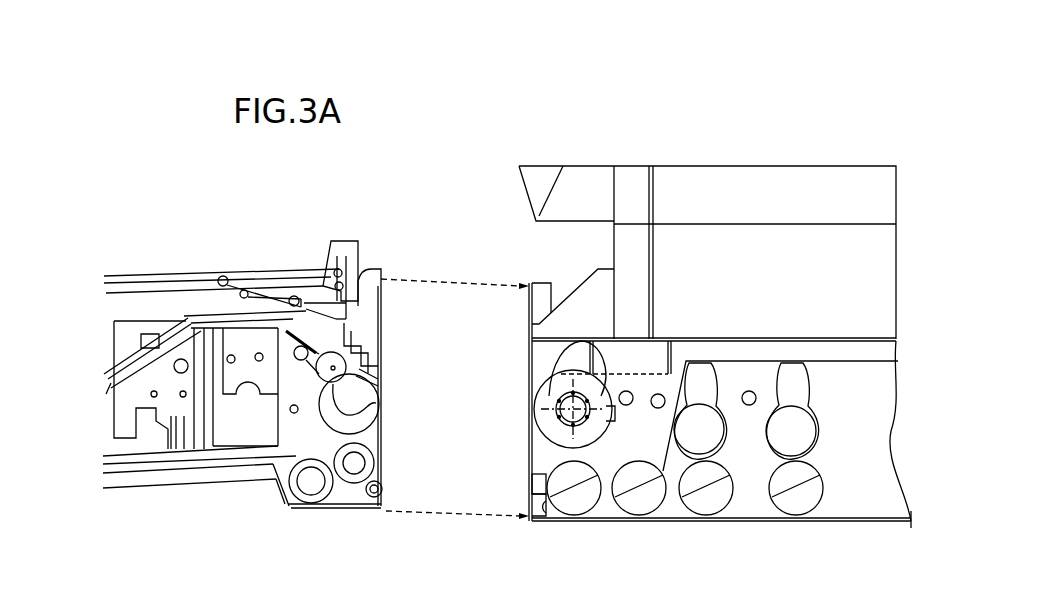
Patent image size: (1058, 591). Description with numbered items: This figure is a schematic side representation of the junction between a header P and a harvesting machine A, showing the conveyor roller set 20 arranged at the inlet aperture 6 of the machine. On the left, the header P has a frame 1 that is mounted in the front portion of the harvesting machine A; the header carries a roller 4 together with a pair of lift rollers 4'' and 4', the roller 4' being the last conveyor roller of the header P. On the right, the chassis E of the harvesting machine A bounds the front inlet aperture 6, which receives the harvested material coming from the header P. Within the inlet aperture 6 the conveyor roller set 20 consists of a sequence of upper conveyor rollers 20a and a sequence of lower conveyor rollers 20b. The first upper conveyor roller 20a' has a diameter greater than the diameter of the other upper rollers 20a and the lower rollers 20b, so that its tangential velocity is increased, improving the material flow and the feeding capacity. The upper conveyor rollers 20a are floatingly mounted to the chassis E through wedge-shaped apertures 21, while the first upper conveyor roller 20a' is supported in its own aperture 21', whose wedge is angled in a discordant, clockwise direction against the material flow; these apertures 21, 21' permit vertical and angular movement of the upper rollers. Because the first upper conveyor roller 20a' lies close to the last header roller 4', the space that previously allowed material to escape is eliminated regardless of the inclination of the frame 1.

The header P is at (100, 165).
The frame 1 is at (250, 340).
The roller 4 is at (311, 521).
The lift roller 4'' is at (354, 513).
The last conveyor roller 4' is at (371, 478).
The inlet aperture 6 is at (528, 405).
The harvesting machine A is at (856, 128).
The chassis E is at (742, 200).
The set of conveyor rollers 20 is at (808, 532).
The upper conveyor rollers 20a is at (811, 396).
The first upper conveyor roller 20a' is at (534, 417).
The lower conveyor rollers 20b is at (640, 507).
The apertures 21 is at (809, 364).
The aperture 21' is at (744, 314).